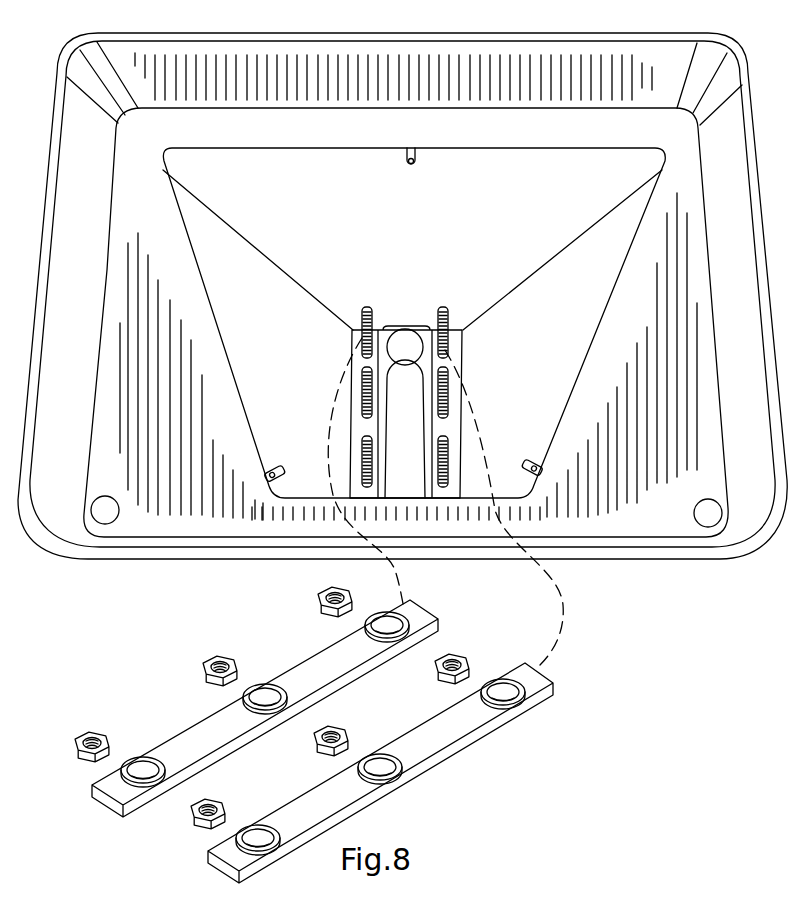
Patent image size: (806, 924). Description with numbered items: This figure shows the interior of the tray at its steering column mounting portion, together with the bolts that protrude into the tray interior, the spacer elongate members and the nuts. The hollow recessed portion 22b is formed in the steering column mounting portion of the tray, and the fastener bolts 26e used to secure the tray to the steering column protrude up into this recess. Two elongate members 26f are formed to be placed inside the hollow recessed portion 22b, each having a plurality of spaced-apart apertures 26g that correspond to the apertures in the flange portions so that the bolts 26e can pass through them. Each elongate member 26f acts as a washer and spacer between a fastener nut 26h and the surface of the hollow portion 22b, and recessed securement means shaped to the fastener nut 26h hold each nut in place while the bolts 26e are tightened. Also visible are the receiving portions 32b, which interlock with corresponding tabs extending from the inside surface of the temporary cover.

The hollow recessed portion 22b is at (527, 390).
The fastener bolt 26e is at (448, 312).
The elongate member 26f is at (413, 618).
The spaced-apart apertures 26g is at (264, 692).
The fastener nut 26h is at (463, 651).
The receiving portions 32b is at (410, 164).